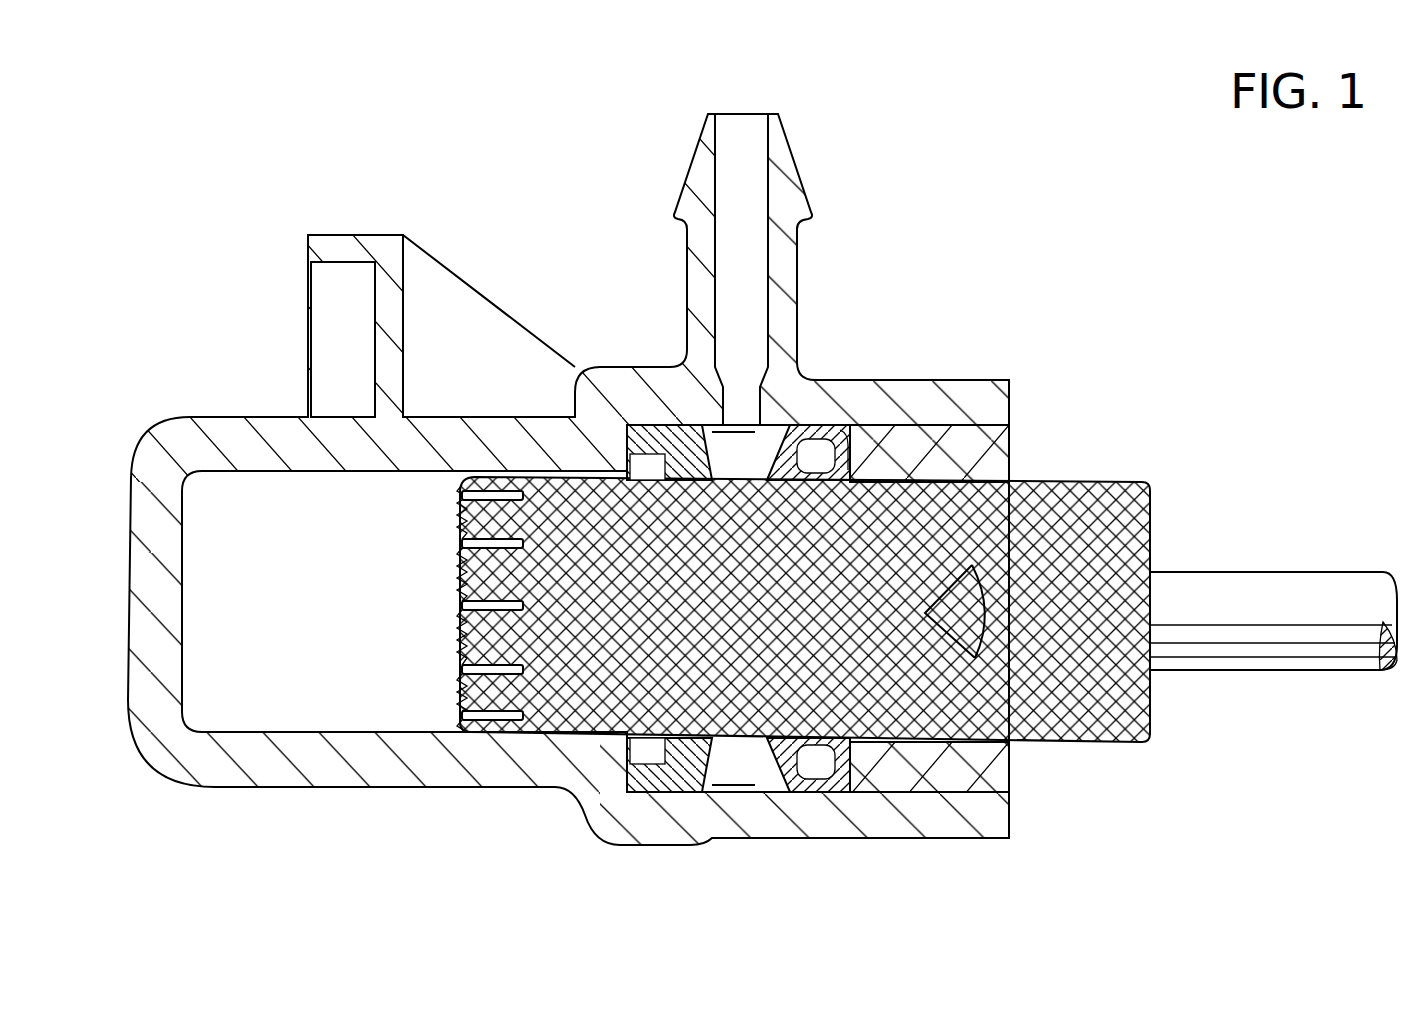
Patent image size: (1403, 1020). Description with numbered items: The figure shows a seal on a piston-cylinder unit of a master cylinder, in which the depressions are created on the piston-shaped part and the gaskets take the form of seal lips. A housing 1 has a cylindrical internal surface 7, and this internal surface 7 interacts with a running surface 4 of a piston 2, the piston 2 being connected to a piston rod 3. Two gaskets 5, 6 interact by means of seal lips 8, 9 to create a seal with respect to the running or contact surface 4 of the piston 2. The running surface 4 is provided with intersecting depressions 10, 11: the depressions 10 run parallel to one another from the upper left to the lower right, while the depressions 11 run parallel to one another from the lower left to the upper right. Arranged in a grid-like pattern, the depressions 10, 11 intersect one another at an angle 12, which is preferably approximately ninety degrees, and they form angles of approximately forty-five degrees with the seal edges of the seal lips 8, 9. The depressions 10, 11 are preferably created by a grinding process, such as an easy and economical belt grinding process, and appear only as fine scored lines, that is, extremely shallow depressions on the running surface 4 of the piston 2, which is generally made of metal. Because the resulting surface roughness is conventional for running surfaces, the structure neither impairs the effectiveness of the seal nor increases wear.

The housing 1 is at (240, 445).
The piston 2 is at (1153, 512).
The piston rod 3 is at (1325, 590).
The running surface 4 is at (1062, 745).
The gasket 5 is at (667, 430).
The gasket 6 is at (855, 423).
The cylindrical internal surface 7 is at (400, 477).
The seal lip 8 is at (632, 432).
The seal lip 9 is at (800, 457).
The depressions 10 is at (1103, 510).
The depressions 11 is at (1058, 515).
The angle 12 is at (990, 622).